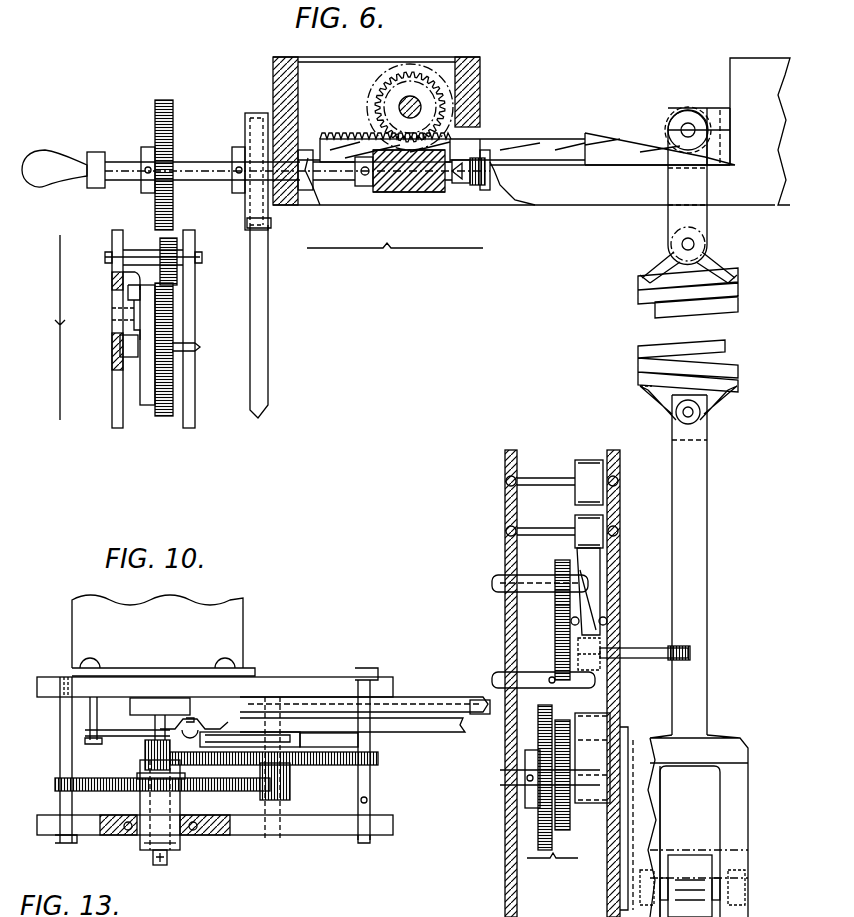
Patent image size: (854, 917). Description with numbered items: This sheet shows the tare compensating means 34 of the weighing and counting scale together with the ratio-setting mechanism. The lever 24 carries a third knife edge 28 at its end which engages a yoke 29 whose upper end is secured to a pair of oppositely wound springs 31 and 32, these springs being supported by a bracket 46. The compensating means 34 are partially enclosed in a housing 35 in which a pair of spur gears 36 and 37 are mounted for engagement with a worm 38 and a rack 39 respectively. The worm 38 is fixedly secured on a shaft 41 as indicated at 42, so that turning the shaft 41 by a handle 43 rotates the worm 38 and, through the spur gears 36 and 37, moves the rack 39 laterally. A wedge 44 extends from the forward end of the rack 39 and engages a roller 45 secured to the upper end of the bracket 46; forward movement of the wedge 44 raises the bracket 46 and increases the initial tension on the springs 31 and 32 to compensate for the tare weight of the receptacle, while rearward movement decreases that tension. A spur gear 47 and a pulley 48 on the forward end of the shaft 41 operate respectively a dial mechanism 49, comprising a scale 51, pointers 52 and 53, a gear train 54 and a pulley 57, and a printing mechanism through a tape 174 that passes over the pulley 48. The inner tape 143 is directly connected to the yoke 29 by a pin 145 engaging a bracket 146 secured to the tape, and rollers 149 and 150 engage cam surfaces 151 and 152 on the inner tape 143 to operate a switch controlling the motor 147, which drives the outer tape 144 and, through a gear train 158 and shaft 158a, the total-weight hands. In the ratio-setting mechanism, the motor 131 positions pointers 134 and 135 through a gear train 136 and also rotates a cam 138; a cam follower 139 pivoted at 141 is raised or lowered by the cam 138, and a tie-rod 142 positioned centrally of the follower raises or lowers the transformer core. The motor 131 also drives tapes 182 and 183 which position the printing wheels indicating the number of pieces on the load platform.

In FIG. 6, the lever 24 is at (688, 856).
In FIG. 6, the third knife edge 28 is at (748, 900).
In FIG. 6, the yoke 29 is at (745, 760).
In FIG. 6, the spring 31 is at (638, 363).
In FIG. 6, the spring 32 is at (638, 300).
In FIG. 6, the compensating means 34 is at (398, 273).
In FIG. 6, the housing 35 is at (273, 64).
In FIG. 6, the spur gear 36 is at (435, 70).
In FIG. 6, the spur gear 37 is at (388, 97).
In FIG. 6, the worm 38 is at (425, 192).
In FIG. 6, the rack 39 is at (330, 135).
In FIG. 6, the shaft 41 is at (198, 158).
In FIG. 6, the worm securing point 42 is at (362, 178).
In FIG. 6, the handle 43 is at (50, 162).
In FIG. 6, the wedge 44 is at (604, 137).
In FIG. 6, the roller 45 is at (680, 110).
In FIG. 6, the bracket 46 is at (675, 225).
In FIG. 6, the spur gear 47 is at (164, 98).
In FIG. 6, the pulley 48 is at (245, 212).
In FIG. 6, the dial mechanism 49 is at (58, 325).
In FIG. 6, the scale 51 is at (125, 310).
In FIG. 6, the pointer 52 is at (120, 270).
In FIG. 6, the pointer 53 is at (118, 355).
In FIG. 6, the gear train 54 is at (232, 289).
In FIG. 6, the pulley 57 is at (150, 405).
In FIG. 6, the tape 174 is at (268, 352).
In FIG. 10, the motor 131 is at (160, 640).
In FIG. 10, the pointer 134 is at (142, 845).
In FIG. 10, the pointer 135 is at (168, 862).
In FIG. 10, the gear train 136 is at (255, 845).
In FIG. 10, the cam 138 is at (326, 741).
In FIG. 10, the cam follower 139 is at (246, 735).
In FIG. 10, the pivot 141 is at (94, 744).
In FIG. 10, the tie-rod 142 is at (192, 715).
In FIG. 10, the tape 182 is at (428, 692).
In FIG. 10, the tape 183 is at (428, 732).
In FIG. 6, the inner tape 143 is at (585, 512).
In FIG. 6, the outer tape 144 is at (586, 460).
In FIG. 6, the pin 145 is at (640, 647).
In FIG. 6, the bracket 146 is at (602, 668).
In FIG. 6, the motor 147 is at (662, 797).
In FIG. 6, the roller 149 is at (560, 632).
In FIG. 6, the roller 150 is at (607, 619).
In FIG. 6, the cam surface 151 is at (565, 618).
In FIG. 6, the cam surface 152 is at (603, 590).
In FIG. 6, the gear train 158 is at (540, 778).
In FIG. 6, the shaft 158a is at (490, 580).